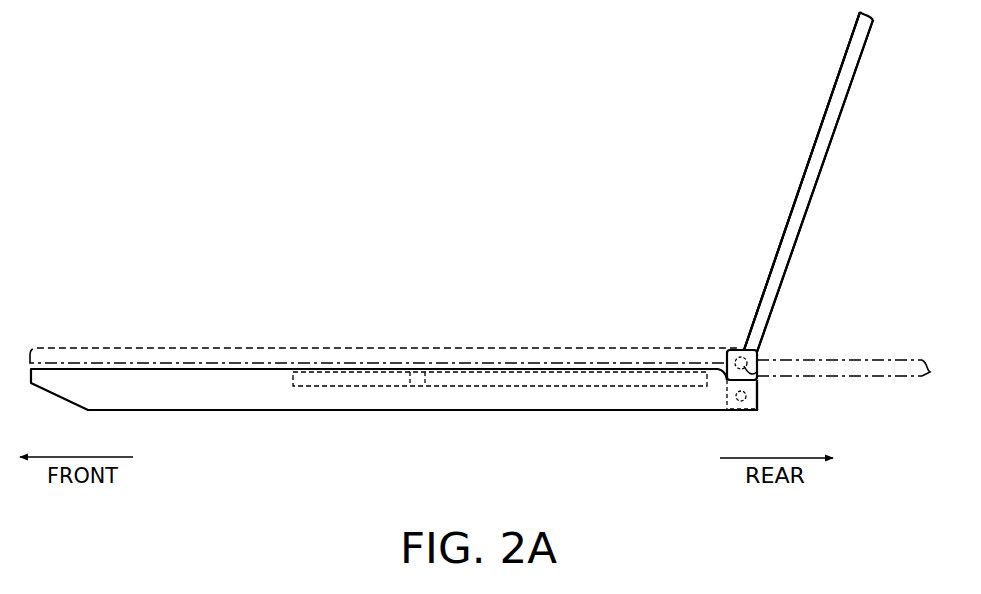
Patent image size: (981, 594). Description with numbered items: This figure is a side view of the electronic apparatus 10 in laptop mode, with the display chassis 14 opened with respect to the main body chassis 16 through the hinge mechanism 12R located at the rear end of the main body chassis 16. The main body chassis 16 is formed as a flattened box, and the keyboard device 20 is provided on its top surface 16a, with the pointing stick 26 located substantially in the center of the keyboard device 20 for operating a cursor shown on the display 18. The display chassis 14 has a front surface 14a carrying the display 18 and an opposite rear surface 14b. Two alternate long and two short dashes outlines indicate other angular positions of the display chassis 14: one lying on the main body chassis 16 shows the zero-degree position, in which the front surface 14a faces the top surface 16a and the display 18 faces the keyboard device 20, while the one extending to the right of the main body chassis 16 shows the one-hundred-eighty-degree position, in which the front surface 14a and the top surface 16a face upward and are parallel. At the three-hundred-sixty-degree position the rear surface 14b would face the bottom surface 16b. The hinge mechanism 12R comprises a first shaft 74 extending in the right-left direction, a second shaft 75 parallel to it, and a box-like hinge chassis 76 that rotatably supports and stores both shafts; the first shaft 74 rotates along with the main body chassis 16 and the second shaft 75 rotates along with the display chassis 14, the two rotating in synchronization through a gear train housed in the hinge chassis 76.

The electronic apparatus 10 is at (302, 135).
The hinge mechanism 12R is at (760, 410).
The display chassis 14 is at (794, 82).
The front surface 14a is at (803, 172).
The rear surface 14b is at (818, 182).
The main body chassis 16 is at (390, 292).
The top surface 16a is at (172, 368).
The bottom surface 16b is at (330, 411).
The display 18 is at (780, 230).
The keyboard device 20 is at (472, 390).
The pointing stick 26 is at (410, 386).
The first shaft 74 is at (727, 410).
The second shaft 75 is at (733, 352).
The hinge chassis 76 is at (763, 370).